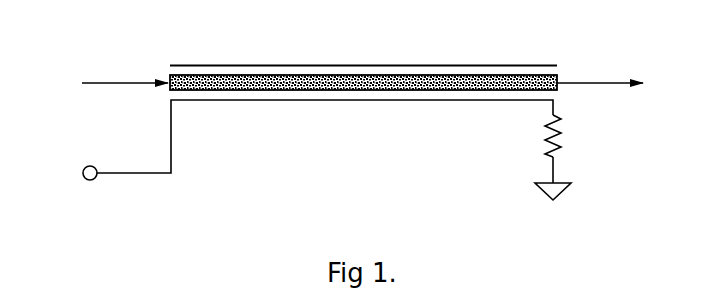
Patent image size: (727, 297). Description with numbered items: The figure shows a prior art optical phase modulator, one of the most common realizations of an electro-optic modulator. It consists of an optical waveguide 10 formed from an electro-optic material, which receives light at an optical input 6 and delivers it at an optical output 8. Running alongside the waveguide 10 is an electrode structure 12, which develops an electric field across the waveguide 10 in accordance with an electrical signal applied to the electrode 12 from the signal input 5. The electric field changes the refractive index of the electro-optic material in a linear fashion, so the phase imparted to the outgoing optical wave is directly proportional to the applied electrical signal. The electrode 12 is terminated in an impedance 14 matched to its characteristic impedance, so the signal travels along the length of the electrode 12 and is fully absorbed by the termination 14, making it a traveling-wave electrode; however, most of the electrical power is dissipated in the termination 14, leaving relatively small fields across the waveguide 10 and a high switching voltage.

The signal input 5 is at (83, 174).
The optical input 6 is at (112, 83).
The optical output 8 is at (616, 83).
The optical waveguide 10 is at (304, 81).
The electrode structure 12 is at (399, 111).
The termination impedance 14 is at (558, 150).